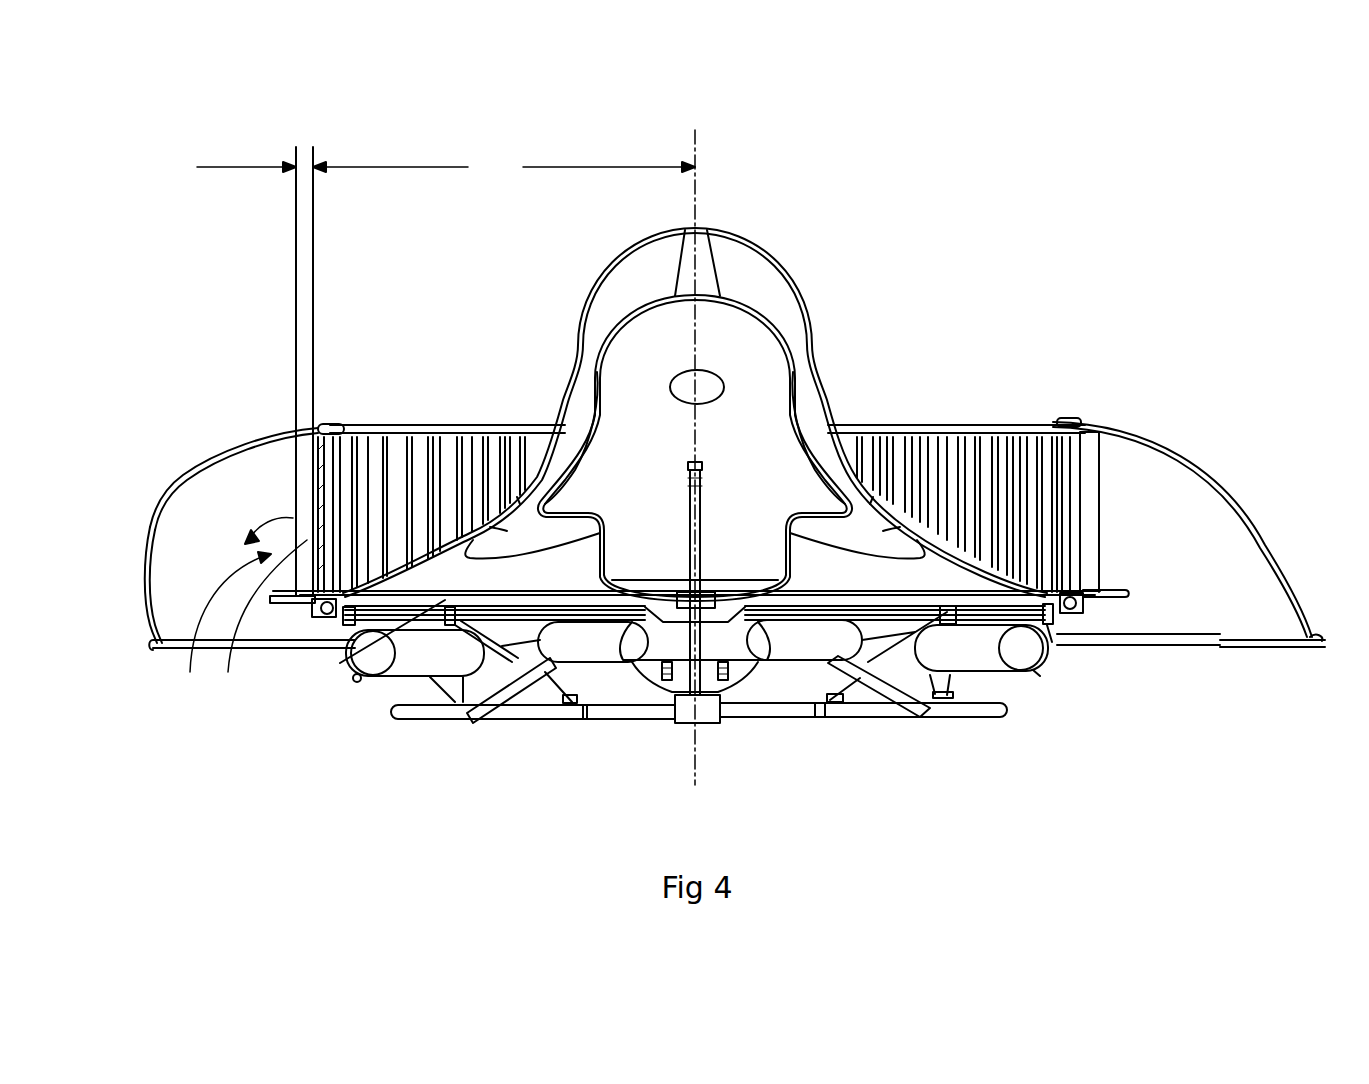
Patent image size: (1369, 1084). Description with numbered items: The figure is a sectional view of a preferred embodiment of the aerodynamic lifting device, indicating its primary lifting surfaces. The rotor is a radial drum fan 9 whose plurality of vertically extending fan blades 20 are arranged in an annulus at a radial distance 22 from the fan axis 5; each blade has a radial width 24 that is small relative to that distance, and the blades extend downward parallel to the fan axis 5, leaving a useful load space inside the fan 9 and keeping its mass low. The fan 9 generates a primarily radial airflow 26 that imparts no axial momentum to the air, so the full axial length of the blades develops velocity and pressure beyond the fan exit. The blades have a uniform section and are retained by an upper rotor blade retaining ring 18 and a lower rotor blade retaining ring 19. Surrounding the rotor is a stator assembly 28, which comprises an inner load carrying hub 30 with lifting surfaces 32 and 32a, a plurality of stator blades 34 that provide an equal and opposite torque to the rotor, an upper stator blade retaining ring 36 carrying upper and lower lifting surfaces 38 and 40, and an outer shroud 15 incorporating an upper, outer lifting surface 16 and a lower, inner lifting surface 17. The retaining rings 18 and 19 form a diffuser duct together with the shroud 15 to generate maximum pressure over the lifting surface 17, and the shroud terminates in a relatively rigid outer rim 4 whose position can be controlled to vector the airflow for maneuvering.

The outer rim 4 is at (1322, 644).
The fan axis 5 is at (700, 212).
The radial drum fan 9 is at (218, 624).
The outer shroud 15 is at (138, 553).
The upper lifting surface 16 is at (200, 455).
The lower lifting surface 17 is at (1180, 460).
The upper rotor blade retaining ring 18 is at (1098, 434).
The lower rotor blade retaining ring 19 is at (1105, 587).
The fan blades 20 is at (267, 623).
The radial distance 22 is at (504, 160).
The radial width 24 is at (219, 157).
The radial airflow 26 is at (250, 526).
The stator assembly 28 is at (547, 402).
The inner load carrying hub 30 is at (577, 355).
The lifting surface 32 is at (350, 667).
The lifting surface 32a is at (968, 545).
The stator blades 34 is at (327, 480).
The upper stator blade retaining ring 36 is at (320, 428).
The upper lifting surface 38 is at (318, 415).
The lower lifting surface 40 is at (317, 440).